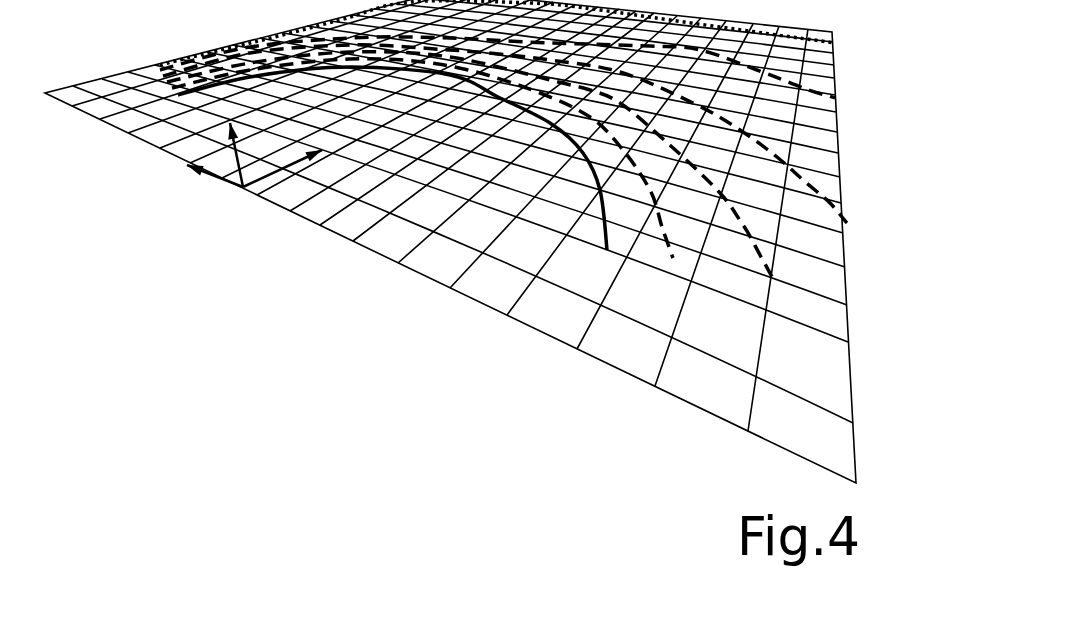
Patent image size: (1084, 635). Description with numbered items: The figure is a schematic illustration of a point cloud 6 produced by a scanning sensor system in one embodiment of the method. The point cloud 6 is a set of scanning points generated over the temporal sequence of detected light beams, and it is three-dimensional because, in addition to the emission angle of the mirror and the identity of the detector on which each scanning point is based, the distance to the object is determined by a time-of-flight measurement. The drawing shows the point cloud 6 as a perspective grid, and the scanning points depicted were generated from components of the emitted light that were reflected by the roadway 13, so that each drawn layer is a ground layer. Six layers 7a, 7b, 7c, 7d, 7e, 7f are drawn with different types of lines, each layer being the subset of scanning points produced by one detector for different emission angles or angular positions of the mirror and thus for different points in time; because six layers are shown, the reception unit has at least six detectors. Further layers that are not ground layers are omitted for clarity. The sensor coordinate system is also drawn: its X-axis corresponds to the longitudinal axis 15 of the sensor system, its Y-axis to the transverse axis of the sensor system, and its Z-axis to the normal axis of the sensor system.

The point cloud 6 is at (268, 29).
The roadway 13 is at (299, 160).
The longitudinal axis 15 is at (323, 161).
The layer of the point cloud 7a is at (673, 258).
The layer of the point cloud 7b is at (772, 277).
The layer of the point cloud 7c is at (852, 227).
The layer of the point cloud 7d is at (843, 101).
The layer of the point cloud 7e is at (836, 42).
The layer of the point cloud 7f is at (607, 250).